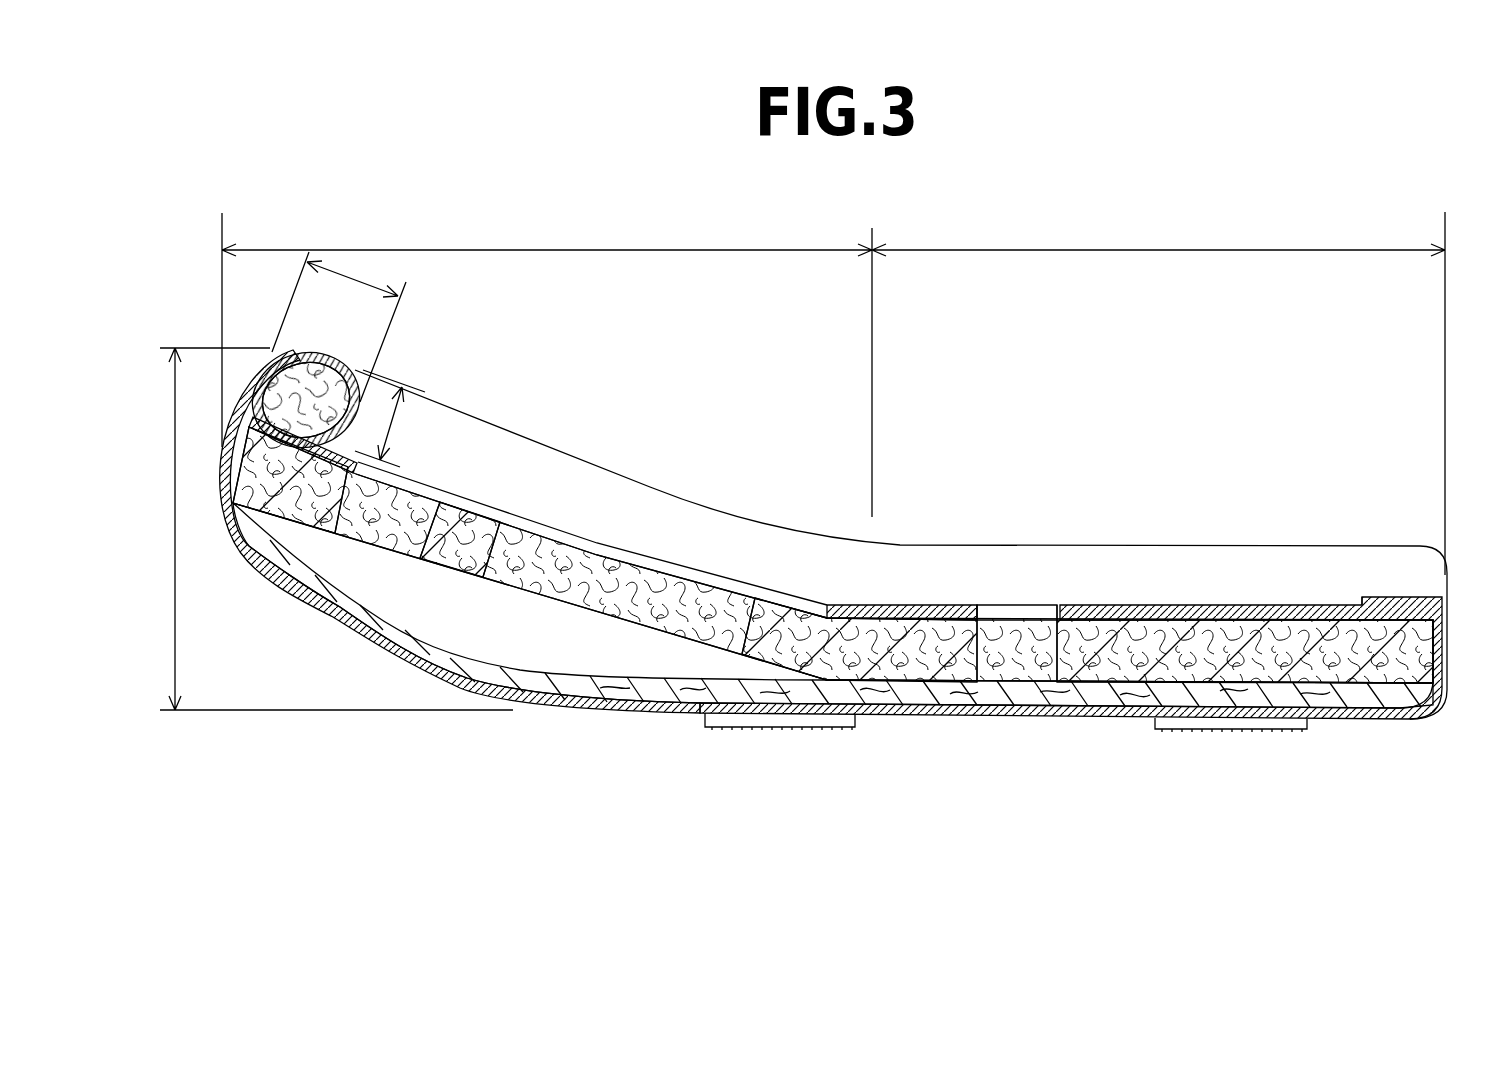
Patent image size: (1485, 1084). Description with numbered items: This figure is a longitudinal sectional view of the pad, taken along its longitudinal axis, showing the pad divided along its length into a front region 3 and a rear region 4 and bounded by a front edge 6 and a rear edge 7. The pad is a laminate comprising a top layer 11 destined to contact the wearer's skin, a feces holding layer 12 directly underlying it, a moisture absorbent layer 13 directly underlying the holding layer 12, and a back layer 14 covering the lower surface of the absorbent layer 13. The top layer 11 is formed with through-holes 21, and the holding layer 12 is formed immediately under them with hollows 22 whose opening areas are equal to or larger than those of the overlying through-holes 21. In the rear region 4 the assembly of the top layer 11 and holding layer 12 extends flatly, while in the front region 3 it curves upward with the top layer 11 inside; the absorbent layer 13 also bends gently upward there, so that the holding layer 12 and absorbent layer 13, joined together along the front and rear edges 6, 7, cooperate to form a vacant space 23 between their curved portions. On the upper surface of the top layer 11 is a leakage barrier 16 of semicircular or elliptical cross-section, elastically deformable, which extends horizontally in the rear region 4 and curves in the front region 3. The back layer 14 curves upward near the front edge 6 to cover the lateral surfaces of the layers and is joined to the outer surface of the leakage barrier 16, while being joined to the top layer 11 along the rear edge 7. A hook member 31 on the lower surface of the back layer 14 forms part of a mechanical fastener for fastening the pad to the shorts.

The front region 3 is at (537, 250).
The rear region 4 is at (1128, 250).
The front edge 6 is at (323, 382).
The rear edge 7 is at (1370, 667).
The top layer 11 is at (1223, 612).
The feces holding layer 12 is at (1163, 633).
The moisture absorbent layer 13 is at (1130, 700).
The back layer 14 is at (1005, 720).
The leakage barrier 16 is at (878, 555).
The through-hole 21 is at (1008, 612).
The hollow 22 is at (1070, 580).
The vacant space 23 is at (560, 660).
The hook member 31 is at (1257, 730).